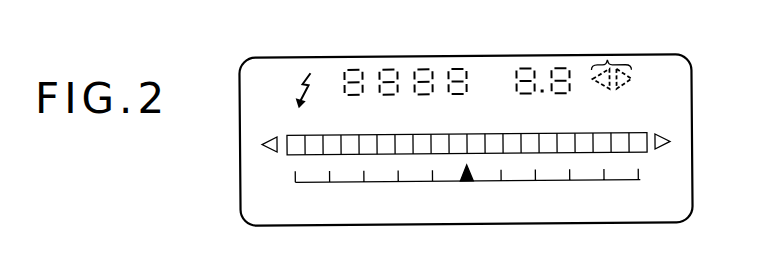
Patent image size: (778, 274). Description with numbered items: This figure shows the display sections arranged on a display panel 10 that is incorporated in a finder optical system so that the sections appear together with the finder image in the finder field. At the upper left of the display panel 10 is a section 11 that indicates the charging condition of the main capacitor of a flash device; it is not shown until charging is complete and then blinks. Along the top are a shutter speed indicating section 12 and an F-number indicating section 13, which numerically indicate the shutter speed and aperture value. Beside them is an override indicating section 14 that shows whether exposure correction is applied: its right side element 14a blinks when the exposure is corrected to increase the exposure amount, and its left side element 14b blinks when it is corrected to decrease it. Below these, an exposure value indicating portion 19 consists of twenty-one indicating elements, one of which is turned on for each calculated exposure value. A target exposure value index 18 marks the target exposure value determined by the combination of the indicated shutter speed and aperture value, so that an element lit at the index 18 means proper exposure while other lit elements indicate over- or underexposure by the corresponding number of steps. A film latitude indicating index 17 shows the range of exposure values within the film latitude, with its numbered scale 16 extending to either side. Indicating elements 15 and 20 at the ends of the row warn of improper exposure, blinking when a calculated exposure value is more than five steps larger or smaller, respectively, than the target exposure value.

The display panel 10 is at (337, 56).
The section for indicating charging condition 11 is at (298, 85).
The shutter speed indicating section 12 is at (350, 49).
The F-number indicating section 13 is at (567, 49).
The override indicating section 14 is at (608, 61).
The right side element 14a is at (632, 72).
The left side element 14b is at (596, 74).
The indicating element 15 is at (668, 135).
The exposure scale numerals 16 is at (645, 197).
The film latitude indicating index 17 is at (490, 181).
The target exposure value index 18 is at (465, 182).
The exposure value indicating portion 19 is at (297, 155).
The indicating element 20 is at (258, 141).